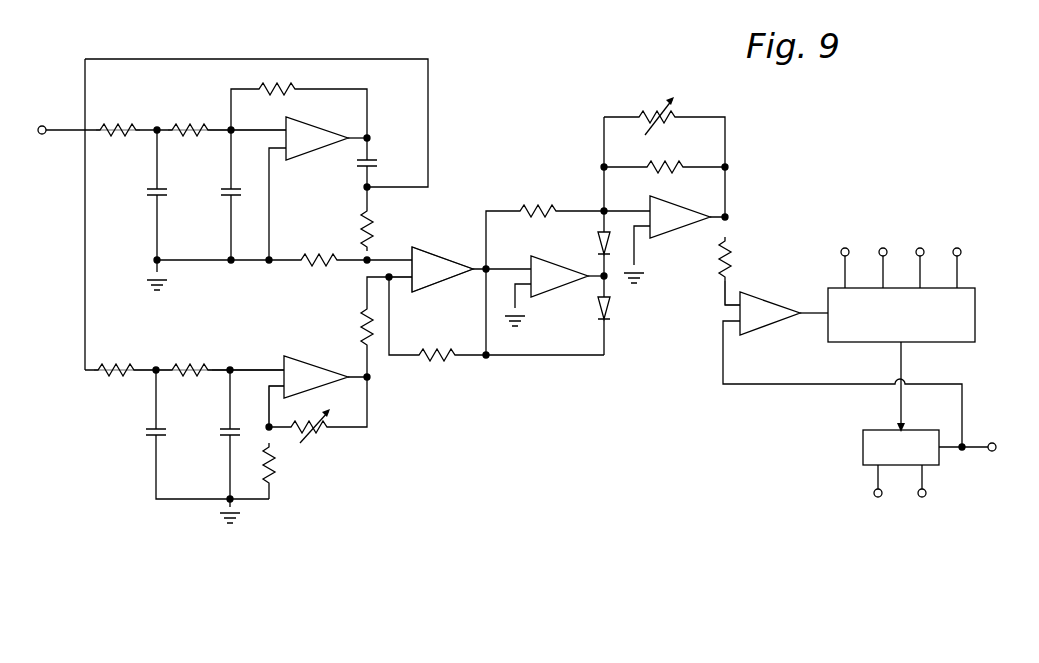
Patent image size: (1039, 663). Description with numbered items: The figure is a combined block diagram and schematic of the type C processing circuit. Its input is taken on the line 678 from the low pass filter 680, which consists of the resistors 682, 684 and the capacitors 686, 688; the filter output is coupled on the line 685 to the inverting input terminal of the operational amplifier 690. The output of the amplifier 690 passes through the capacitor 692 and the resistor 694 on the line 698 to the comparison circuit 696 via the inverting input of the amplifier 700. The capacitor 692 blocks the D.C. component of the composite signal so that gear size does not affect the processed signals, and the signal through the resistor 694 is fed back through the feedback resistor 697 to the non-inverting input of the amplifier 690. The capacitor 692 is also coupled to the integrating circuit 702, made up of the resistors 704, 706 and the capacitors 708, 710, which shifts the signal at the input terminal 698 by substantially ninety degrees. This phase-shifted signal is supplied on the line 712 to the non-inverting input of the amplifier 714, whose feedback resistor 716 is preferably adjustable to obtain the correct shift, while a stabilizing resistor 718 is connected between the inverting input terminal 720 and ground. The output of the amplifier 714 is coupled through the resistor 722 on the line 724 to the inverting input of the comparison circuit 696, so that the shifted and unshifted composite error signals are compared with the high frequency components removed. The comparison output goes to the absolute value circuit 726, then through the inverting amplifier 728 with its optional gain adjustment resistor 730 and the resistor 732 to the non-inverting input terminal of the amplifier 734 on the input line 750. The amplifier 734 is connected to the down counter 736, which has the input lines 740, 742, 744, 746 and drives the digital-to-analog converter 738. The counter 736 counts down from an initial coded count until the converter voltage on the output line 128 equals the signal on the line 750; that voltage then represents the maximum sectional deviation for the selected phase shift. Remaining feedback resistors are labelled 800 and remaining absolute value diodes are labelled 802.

The output line 128 is at (978, 445).
The input line 678 is at (60, 129).
The low pass filter 680 is at (151, 108).
The resistor 682 is at (118, 128).
The resistor 684 is at (186, 128).
The line 685 is at (266, 129).
The capacitor 686 is at (148, 192).
The capacitor 688 is at (222, 192).
The operational amplifier 690 is at (325, 146).
The capacitor 692 is at (380, 163).
The resistor 694 is at (361, 213).
The comparison circuit 696 is at (452, 251).
The feedback resistor 697 is at (310, 258).
The line 698 is at (410, 253).
The amplifier 700 is at (455, 274).
The integrating circuit 702 is at (112, 473).
The resistor 704 is at (116, 368).
The resistor 706 is at (186, 366).
The capacitor 708 is at (146, 433).
The capacitor 710 is at (222, 432).
The line 712 is at (276, 368).
The amplifier 714 is at (329, 359).
The feedback resistor 716 is at (330, 441).
The stabilizing resistor 718 is at (275, 462).
The inverting input terminal 720 is at (278, 408).
The resistor 722 is at (363, 317).
The line 724 is at (412, 290).
The absolute value circuit 726 is at (557, 296).
The inverting amplifier 728 is at (684, 231).
The gain adjustment resistor 730 is at (652, 108).
The resistor 732 is at (731, 250).
The amplifier 734 is at (778, 319).
The down counter 736 is at (977, 312).
The digital-to-analog converter 738 is at (863, 445).
The input line 740 is at (843, 270).
The input line 742 is at (881, 263).
The input line 744 is at (920, 269).
The input line 746 is at (960, 270).
The input line 750 is at (735, 301).
The feedback resistor 800 is at (288, 83).
The diode 802 is at (598, 243).